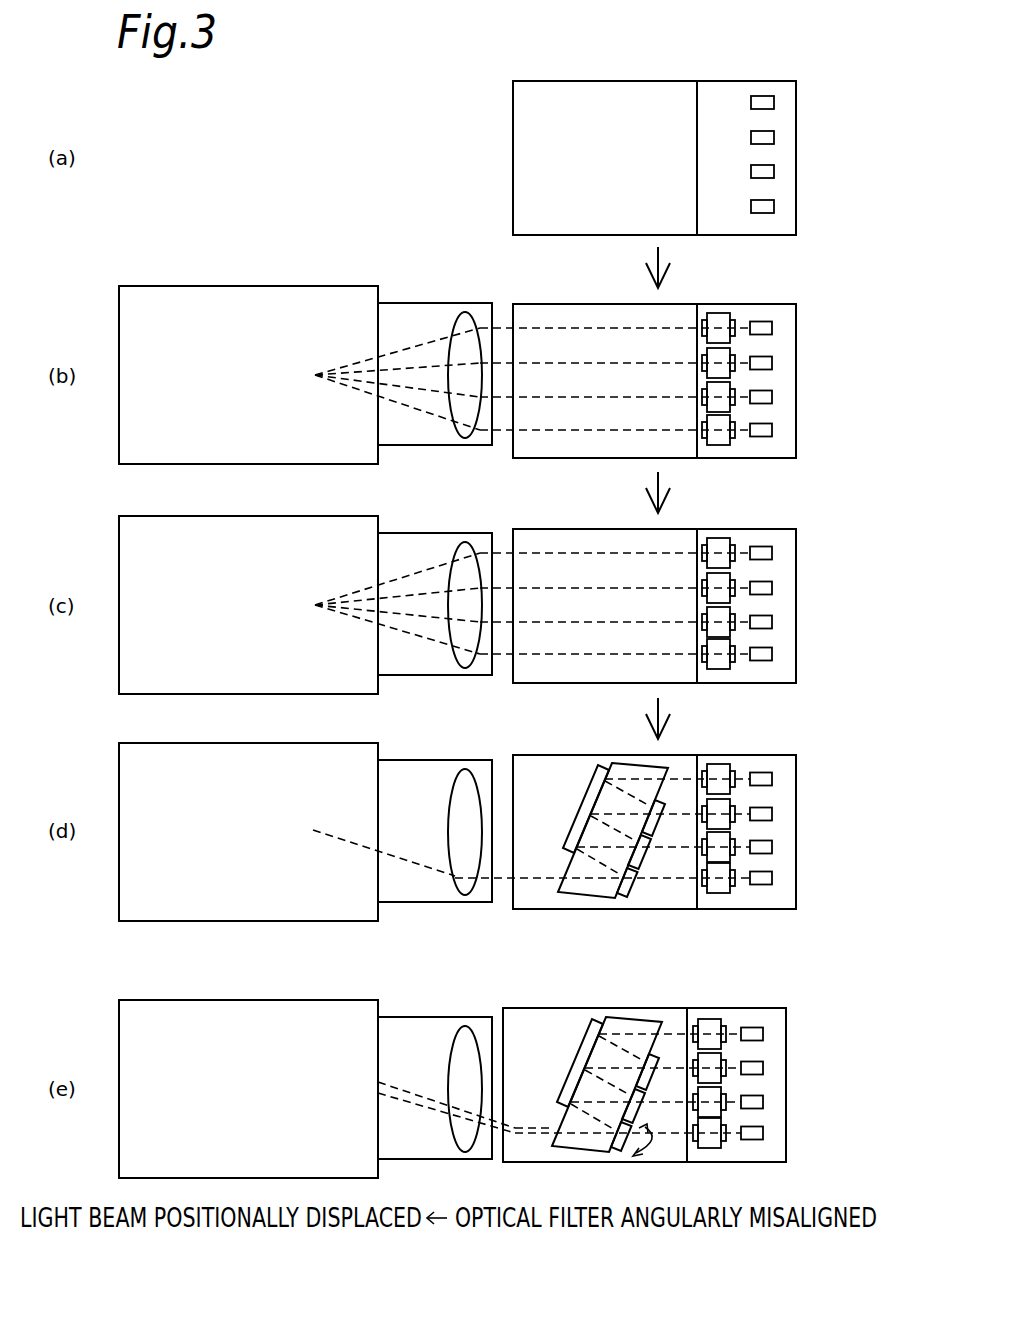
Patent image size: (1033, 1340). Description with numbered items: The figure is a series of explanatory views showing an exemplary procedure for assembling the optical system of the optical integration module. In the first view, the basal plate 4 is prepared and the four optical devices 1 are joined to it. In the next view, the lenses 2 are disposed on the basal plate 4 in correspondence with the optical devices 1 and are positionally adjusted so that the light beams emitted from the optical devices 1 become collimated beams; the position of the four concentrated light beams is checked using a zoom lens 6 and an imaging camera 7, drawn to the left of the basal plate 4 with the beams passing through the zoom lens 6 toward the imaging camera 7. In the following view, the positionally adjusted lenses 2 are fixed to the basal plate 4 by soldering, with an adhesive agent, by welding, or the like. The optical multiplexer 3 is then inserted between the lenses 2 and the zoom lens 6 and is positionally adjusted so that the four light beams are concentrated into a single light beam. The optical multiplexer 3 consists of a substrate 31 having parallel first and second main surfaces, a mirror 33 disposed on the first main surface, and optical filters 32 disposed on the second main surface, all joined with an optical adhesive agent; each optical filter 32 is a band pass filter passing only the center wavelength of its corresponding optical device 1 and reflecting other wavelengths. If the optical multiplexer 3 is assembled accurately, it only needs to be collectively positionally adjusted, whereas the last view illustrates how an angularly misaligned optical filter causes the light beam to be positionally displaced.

The optical device 1 is at (775, 101).
The lens 2 is at (718, 310).
The optical multiplexer 3 is at (633, 840).
The basal plate 4 is at (513, 163).
The zoom lens 6 is at (468, 315).
The imaging camera 7 is at (257, 295).
The substrate 31 is at (638, 767).
The optical filter 32 is at (677, 875).
The mirror 33 is at (577, 813).